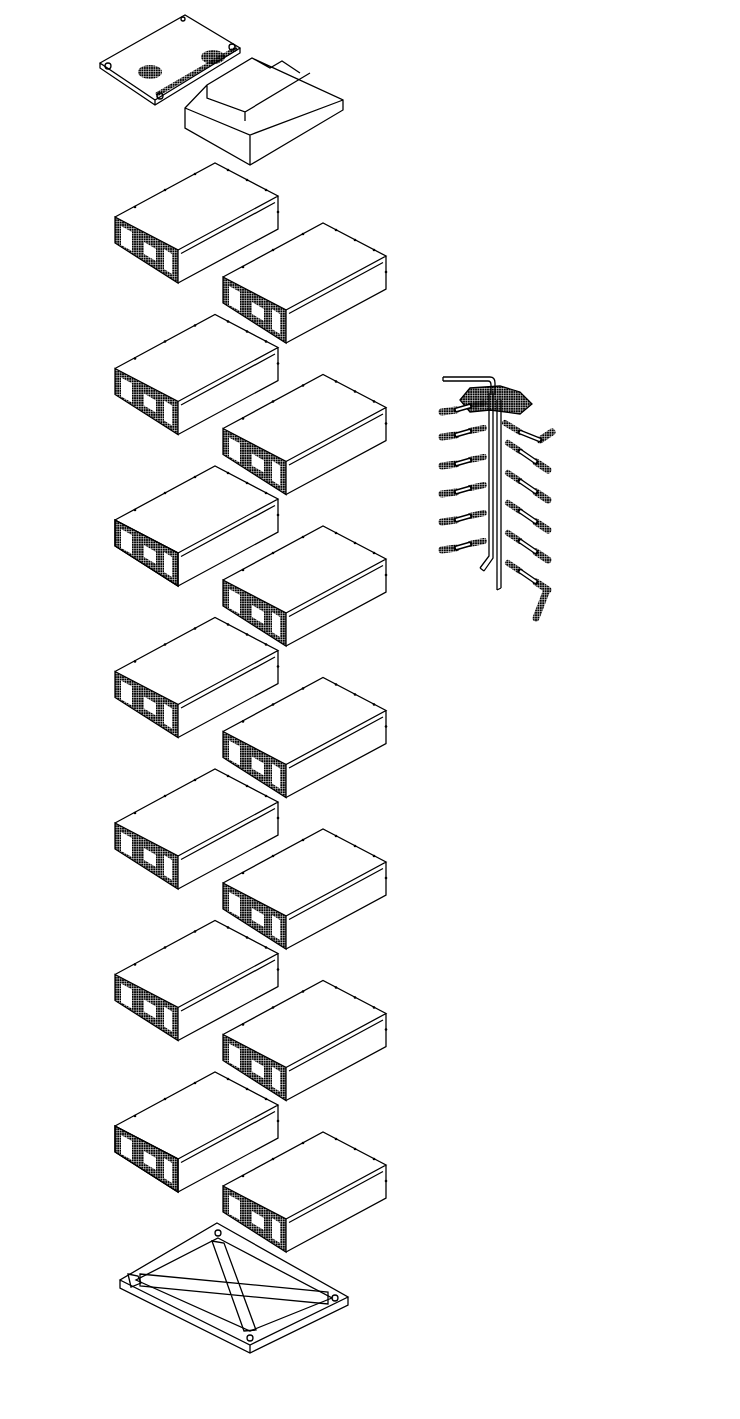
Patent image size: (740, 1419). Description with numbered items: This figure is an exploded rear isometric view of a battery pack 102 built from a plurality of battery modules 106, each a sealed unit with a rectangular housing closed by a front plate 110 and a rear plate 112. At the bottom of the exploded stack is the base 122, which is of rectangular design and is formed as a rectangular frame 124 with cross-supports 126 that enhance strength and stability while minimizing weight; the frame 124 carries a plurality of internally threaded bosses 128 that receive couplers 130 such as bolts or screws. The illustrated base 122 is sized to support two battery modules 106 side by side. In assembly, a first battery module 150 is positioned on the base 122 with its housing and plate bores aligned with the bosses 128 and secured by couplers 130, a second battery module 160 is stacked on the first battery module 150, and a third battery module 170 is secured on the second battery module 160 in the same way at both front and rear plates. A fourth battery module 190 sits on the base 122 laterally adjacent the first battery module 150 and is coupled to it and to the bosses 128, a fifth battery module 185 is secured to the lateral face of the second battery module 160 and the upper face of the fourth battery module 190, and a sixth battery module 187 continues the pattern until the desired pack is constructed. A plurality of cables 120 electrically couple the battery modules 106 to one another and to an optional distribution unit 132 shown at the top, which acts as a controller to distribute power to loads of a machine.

The battery pack 102 is at (585, 0).
The distribution unit 132 is at (360, 111).
The front plate 110 is at (378, 262).
The battery module 106 is at (167, 487).
The rear plate 112 is at (150, 569).
The sixth battery module 187 is at (152, 812).
The third battery module 170 is at (375, 885).
The fifth battery module 185 is at (141, 963).
The second battery module 160 is at (375, 1037).
The fourth battery module 190 is at (165, 1105).
The coupler 130 is at (123, 1159).
The first battery module 150 is at (375, 1187).
The cables 120 is at (493, 604).
The base 122 is at (151, 1302).
The rectangular frame 124 is at (311, 1281).
The bosses 128 is at (121, 1278).
The cross-supports 126 is at (237, 1291).